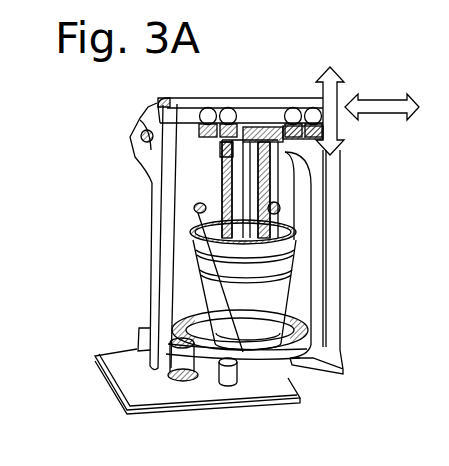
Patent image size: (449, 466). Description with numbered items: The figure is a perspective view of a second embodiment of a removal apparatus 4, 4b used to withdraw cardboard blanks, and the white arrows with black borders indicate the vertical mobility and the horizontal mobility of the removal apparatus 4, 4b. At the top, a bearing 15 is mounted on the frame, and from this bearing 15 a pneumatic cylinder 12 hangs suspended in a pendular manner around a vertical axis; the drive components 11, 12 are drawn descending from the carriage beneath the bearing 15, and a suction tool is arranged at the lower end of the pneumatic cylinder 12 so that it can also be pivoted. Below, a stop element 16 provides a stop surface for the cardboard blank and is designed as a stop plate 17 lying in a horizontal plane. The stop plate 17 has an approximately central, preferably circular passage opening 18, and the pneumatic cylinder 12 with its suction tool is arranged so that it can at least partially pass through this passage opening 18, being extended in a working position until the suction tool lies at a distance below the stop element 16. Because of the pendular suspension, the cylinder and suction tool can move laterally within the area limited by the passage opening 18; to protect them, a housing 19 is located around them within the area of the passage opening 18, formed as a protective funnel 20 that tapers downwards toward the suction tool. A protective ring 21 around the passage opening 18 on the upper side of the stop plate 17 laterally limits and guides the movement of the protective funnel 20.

The removal apparatus 4 is at (185, 236).
The removal apparatus 4b is at (104, 232).
The carriage 11 is at (291, 134).
The pneumatic cylinder 12 is at (268, 188).
The bearing 15 is at (245, 122).
The stop element 16 is at (168, 369).
The stop plate 17 is at (128, 390).
The passage opening 18 is at (289, 373).
The housing 19 is at (304, 277).
The protective funnel 20 is at (273, 297).
The protective ring 21 is at (290, 360).